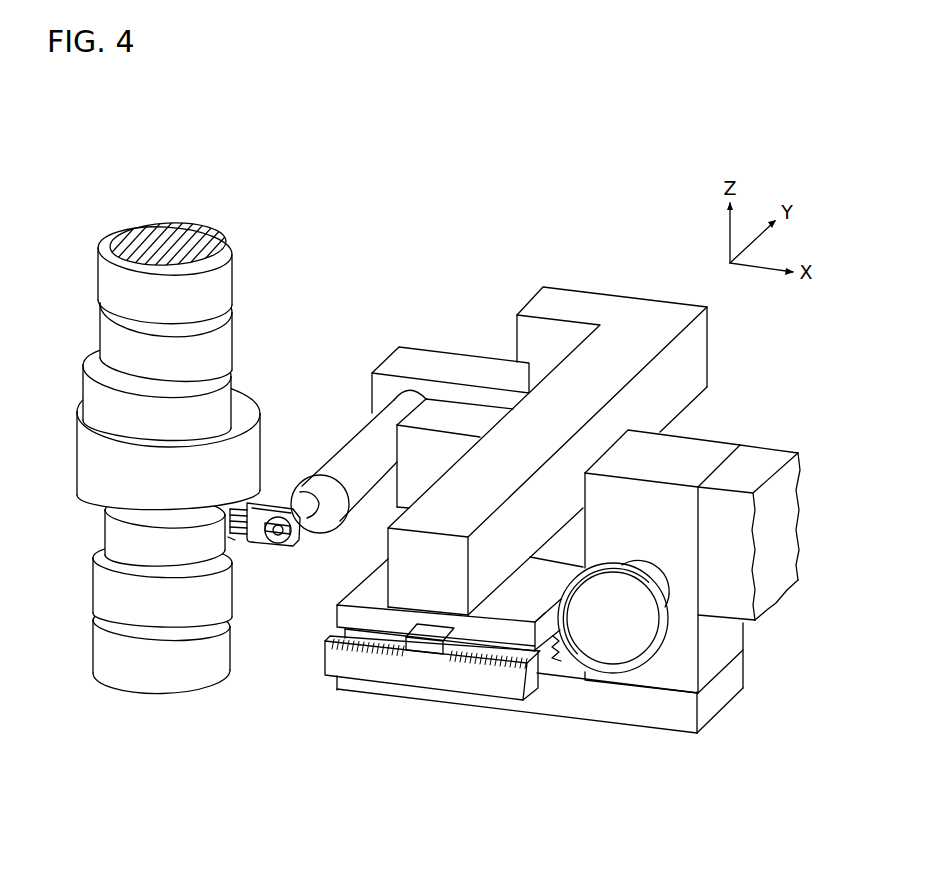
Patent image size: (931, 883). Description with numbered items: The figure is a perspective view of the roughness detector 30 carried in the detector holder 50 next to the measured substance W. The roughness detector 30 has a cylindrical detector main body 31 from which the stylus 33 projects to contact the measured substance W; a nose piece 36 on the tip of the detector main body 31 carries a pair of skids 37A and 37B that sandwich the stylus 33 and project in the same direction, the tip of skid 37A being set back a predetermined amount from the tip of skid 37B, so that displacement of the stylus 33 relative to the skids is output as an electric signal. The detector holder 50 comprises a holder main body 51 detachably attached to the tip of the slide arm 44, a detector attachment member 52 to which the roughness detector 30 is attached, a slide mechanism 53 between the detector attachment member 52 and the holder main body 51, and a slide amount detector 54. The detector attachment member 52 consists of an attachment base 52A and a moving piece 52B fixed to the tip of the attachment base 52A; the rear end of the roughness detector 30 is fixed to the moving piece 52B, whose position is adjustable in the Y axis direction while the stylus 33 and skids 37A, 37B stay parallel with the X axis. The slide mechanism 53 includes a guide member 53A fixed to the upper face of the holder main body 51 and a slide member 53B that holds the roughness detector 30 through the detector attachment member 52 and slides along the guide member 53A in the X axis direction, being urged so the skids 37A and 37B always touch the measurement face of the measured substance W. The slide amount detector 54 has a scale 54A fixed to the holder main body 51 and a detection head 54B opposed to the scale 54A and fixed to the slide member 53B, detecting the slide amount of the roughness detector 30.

The measured substance W is at (184, 232).
The roughness detector 30 is at (351, 442).
The detector main body 31 is at (364, 500).
The stylus 33 is at (229, 556).
The nose piece 36 is at (298, 545).
The skid 37A is at (234, 507).
The skid 37B is at (236, 538).
The slide arm 44 is at (760, 452).
The detector holder 50 is at (600, 236).
The holder main body 51 is at (645, 724).
The detector attachment member 52 is at (437, 248).
The attachment base 52A is at (534, 300).
The moving piece 52B is at (428, 354).
The slide mechanism 53 is at (510, 640).
The guide member 53A is at (558, 660).
The slide member 53B is at (547, 623).
The slide amount detector 54 is at (443, 755).
The scale 54A is at (368, 676).
The detection head 54B is at (424, 651).